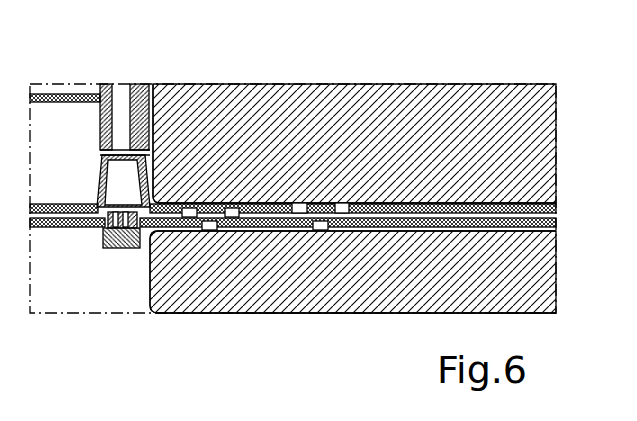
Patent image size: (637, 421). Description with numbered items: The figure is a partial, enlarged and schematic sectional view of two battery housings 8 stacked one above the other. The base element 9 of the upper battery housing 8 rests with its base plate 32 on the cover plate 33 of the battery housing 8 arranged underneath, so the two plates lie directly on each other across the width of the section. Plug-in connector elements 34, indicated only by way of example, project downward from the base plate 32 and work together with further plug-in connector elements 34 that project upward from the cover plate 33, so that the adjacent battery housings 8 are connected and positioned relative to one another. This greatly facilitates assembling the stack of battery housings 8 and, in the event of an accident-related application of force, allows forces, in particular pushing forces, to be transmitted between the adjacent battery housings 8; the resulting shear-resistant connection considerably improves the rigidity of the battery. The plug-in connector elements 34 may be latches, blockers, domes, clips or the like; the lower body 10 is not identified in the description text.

The battery housing 8 is at (546, 158).
The base element 9 is at (494, 80).
The lower housing body 10 is at (385, 318).
The base plate 32 is at (556, 207).
The cover plate 33 is at (556, 225).
The plug-in connector elements 34 is at (190, 208).